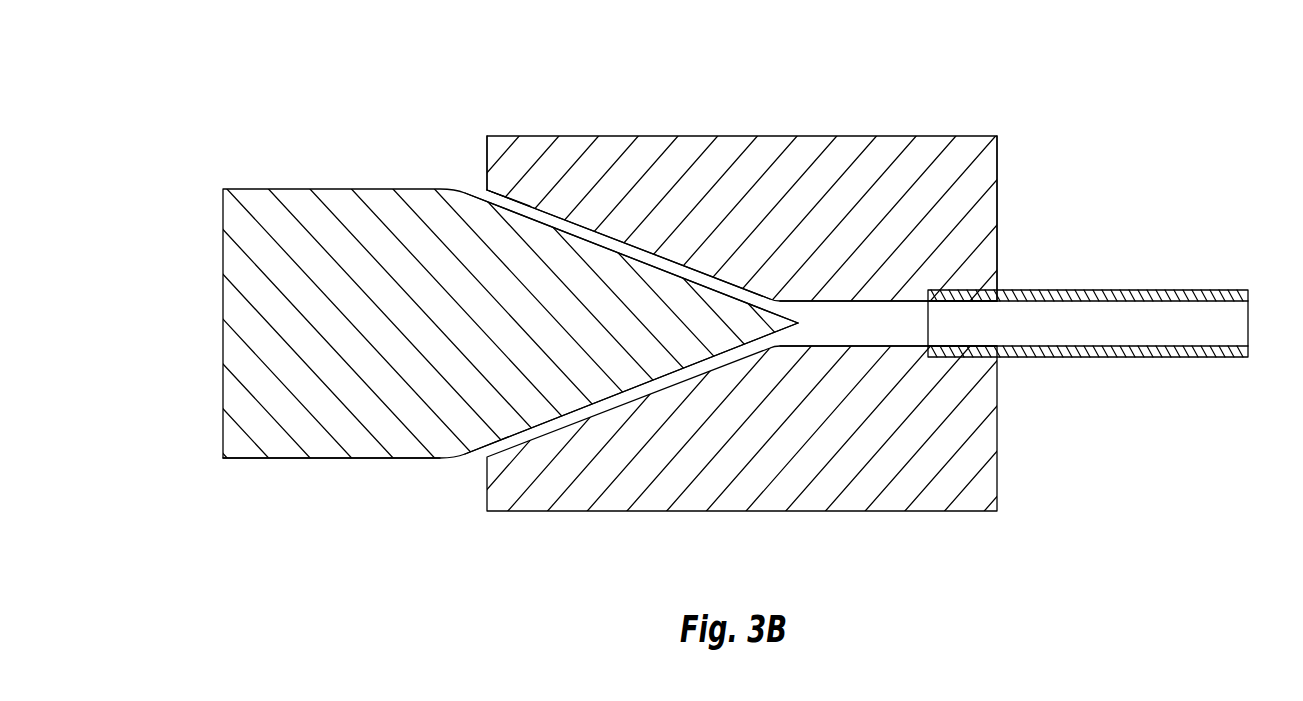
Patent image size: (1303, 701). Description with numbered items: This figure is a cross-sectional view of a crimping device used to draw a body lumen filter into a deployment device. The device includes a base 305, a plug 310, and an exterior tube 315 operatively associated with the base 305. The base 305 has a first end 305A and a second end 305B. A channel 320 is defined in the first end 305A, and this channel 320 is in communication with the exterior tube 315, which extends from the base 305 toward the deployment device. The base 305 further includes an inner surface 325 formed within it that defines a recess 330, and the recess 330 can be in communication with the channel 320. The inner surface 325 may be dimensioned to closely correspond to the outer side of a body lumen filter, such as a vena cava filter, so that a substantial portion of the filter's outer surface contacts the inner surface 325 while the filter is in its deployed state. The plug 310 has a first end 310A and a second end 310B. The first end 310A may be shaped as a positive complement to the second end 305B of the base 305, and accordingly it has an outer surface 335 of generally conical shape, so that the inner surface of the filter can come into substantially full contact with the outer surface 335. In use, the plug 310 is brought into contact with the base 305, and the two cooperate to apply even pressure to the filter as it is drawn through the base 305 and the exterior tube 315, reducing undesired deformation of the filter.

The base 305 is at (777, 135).
The first end 305A is at (967, 127).
The second end 305B is at (503, 121).
The plug 310 is at (342, 202).
The first end 310A is at (750, 352).
The second end 310B is at (250, 464).
The exterior tube 315 is at (1153, 290).
The channel 320 is at (953, 329).
The inner surface 325 is at (595, 217).
The recess 330 is at (489, 197).
The outer surface 335 is at (556, 222).